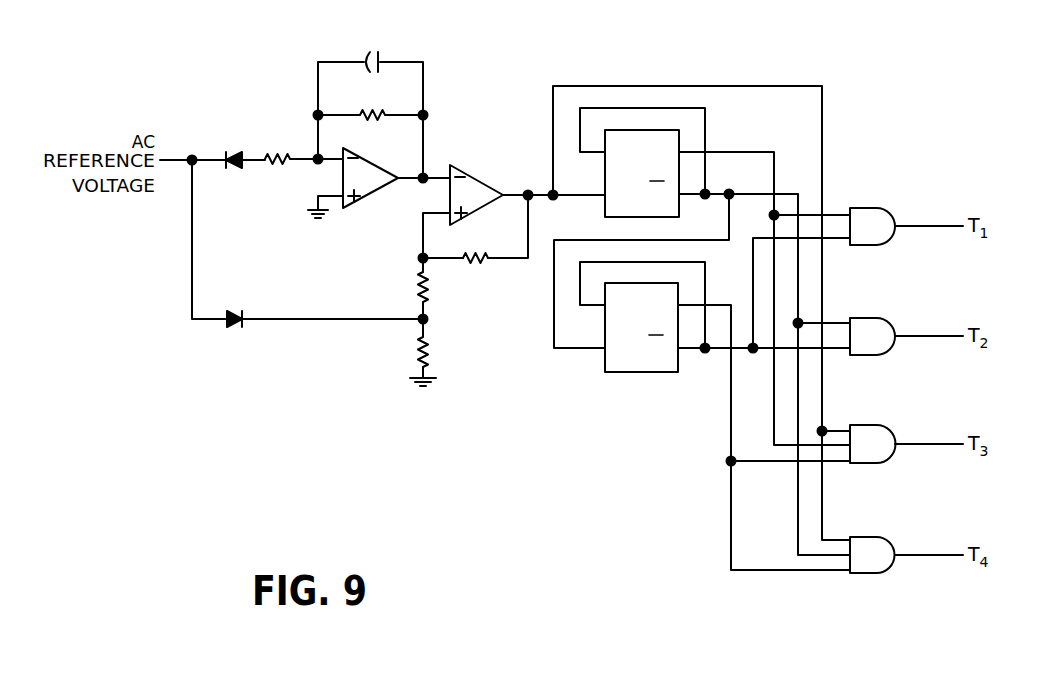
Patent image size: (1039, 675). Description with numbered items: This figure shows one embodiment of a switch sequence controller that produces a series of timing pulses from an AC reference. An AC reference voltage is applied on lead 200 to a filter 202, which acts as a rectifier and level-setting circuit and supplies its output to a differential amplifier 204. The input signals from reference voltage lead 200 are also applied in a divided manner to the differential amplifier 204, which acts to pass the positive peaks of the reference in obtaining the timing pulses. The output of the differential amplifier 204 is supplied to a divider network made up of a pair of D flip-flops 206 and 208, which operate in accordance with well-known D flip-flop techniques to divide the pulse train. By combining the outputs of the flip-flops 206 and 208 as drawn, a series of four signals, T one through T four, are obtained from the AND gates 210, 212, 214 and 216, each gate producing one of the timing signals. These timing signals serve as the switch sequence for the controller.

The lead 200 is at (176, 158).
The filter 202 is at (463, 88).
The differential amplifier 204 is at (478, 177).
The D flip-flop 206 is at (605, 210).
The D flip-flop 208 is at (605, 362).
The AND gate 210 is at (880, 208).
The AND gate 212 is at (880, 318).
The AND gate 214 is at (880, 425).
The AND gate 216 is at (880, 537).